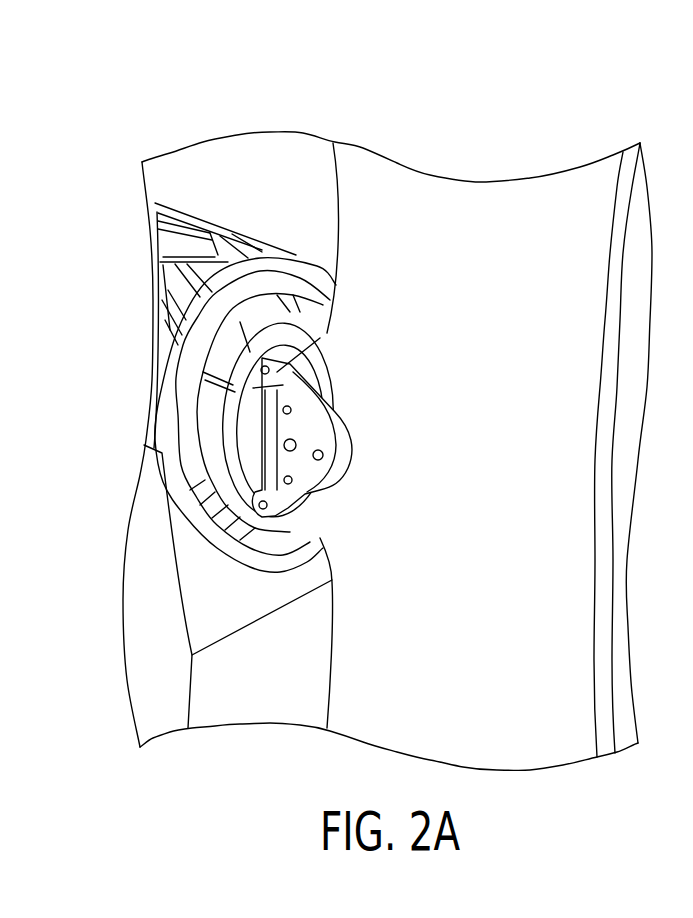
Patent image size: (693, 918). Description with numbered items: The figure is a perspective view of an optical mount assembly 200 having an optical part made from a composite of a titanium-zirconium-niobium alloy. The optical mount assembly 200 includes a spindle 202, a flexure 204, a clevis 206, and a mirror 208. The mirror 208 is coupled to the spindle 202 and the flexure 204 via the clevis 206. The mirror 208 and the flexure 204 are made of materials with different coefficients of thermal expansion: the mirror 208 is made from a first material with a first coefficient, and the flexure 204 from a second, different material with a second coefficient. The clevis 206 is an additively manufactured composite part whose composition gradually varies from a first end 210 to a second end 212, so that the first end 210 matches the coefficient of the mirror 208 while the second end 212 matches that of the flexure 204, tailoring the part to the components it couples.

The optical mount assembly 200 is at (357, 405).
The spindle 202 is at (160, 229).
The flexure 204 is at (190, 381).
The clevis 206 is at (228, 462).
The mirror 208 is at (366, 655).
The first end 210 is at (328, 486).
The second end 212 is at (217, 500).